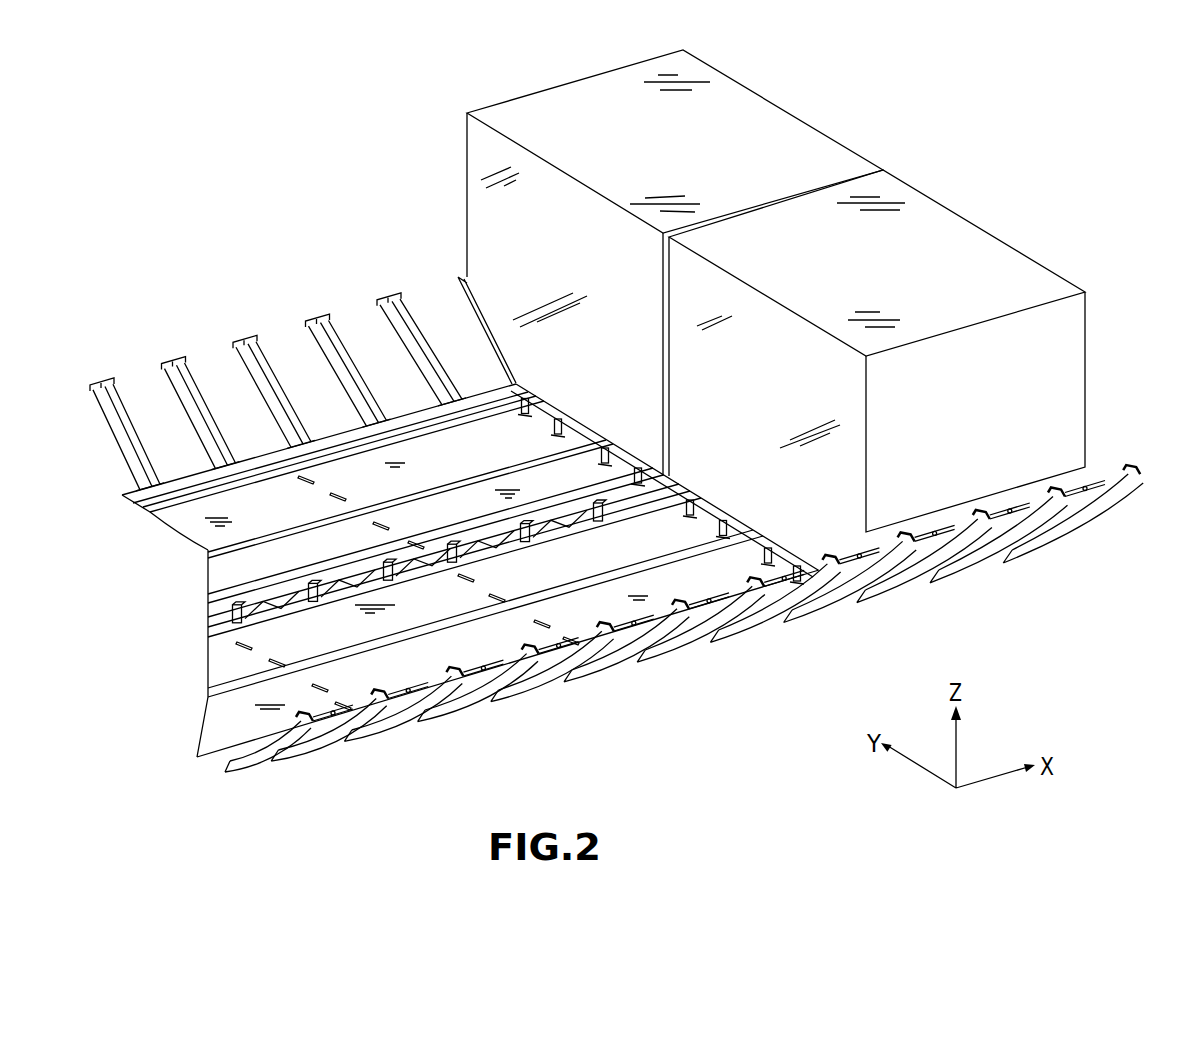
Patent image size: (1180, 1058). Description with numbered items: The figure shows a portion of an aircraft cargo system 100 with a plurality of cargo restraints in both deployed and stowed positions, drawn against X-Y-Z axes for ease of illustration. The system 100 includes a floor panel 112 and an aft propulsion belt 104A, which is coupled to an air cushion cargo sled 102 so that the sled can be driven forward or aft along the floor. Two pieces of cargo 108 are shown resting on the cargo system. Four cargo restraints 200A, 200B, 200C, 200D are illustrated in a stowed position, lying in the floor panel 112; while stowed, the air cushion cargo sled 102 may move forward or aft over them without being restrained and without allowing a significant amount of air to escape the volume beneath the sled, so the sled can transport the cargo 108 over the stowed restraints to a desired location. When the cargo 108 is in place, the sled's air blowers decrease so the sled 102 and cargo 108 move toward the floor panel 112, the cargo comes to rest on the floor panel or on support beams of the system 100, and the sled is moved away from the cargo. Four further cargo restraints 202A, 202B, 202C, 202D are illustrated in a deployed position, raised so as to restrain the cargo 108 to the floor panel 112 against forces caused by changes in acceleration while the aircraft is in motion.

The aircraft cargo system 100 is at (186, 233).
The air cushion cargo sled 102 is at (790, 578).
The aft propulsion belt 104A is at (280, 684).
The cargo 108 is at (922, 212).
The floor panel 112 is at (366, 684).
The cargo restraint 200A is at (574, 648).
The cargo restraint 200B is at (541, 630).
The cargo restraint 200C is at (494, 603).
The cargo restraint 200D is at (461, 585).
The cargo restraint 202A is at (797, 565).
The cargo restraint 202B is at (768, 547).
The cargo restraint 202C is at (723, 519).
The cargo restraint 202D is at (690, 499).